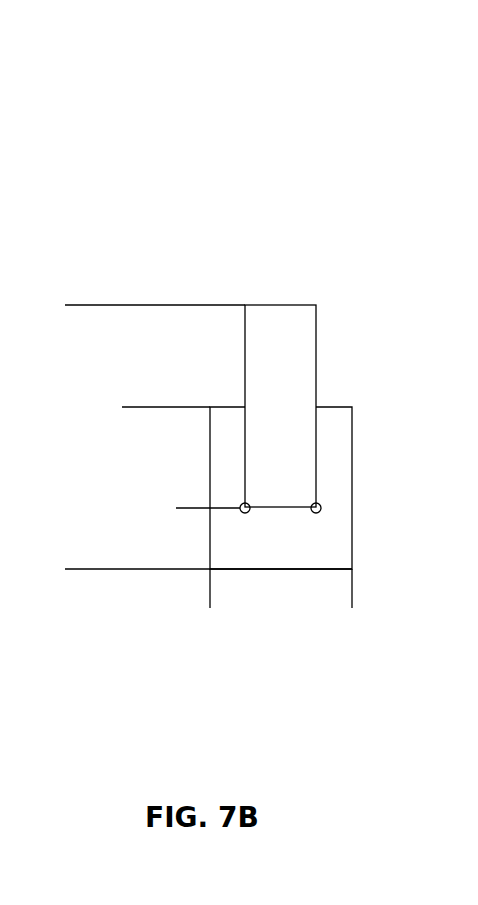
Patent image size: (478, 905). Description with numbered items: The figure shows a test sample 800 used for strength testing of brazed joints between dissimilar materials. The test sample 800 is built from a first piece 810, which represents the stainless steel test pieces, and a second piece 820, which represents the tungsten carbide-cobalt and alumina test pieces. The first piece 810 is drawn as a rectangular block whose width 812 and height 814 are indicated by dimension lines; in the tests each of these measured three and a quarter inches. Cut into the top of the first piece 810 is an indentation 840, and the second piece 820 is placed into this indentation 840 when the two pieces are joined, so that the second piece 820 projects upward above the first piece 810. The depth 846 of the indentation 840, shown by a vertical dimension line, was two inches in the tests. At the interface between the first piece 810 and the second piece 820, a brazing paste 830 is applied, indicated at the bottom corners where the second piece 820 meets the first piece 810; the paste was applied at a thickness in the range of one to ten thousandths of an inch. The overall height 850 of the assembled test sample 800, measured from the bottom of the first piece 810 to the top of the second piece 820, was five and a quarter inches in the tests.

The test sample 800 is at (304, 217).
The first piece 810 is at (343, 553).
The width 812 is at (210, 599).
The height 814 is at (131, 407).
The second piece 820 is at (306, 338).
The brazing paste 830 is at (278, 510).
The indentation 840 is at (317, 450).
The depth 846 is at (184, 407).
The overall height 850 is at (73, 305).